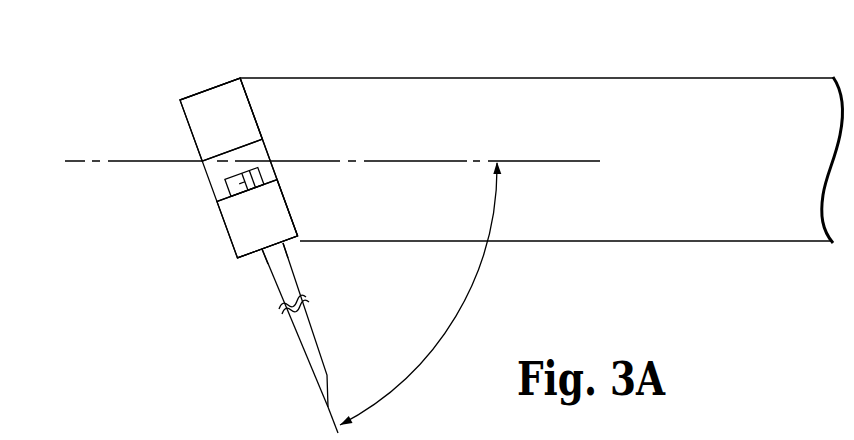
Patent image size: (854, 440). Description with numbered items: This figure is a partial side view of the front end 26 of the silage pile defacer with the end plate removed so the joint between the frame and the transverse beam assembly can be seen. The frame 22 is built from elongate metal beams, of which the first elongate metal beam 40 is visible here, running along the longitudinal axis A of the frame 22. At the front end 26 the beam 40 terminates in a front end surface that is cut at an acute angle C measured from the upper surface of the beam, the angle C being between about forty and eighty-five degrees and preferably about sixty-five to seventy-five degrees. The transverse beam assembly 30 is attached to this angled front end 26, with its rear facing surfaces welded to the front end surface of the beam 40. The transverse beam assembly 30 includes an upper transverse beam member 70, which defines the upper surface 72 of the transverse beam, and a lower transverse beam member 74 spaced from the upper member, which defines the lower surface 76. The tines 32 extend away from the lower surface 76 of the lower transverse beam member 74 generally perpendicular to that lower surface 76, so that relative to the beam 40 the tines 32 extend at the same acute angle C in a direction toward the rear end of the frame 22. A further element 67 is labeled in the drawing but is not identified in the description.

The frame 22 is at (505, 70).
The first elongate metal beam 40 is at (713, 92).
The longitudinal axis A is at (78, 158).
The transverse beam assembly 30 is at (225, 70).
The upper surface 72 is at (207, 89).
The front end 26 is at (250, 96).
The upper transverse beam member 70 is at (185, 108).
The latch mechanism 67 is at (232, 193).
The lower transverse beam member 74 is at (247, 246).
The lower surface 76 is at (251, 263).
The tines 32 is at (305, 330).
The acute angle C is at (456, 316).